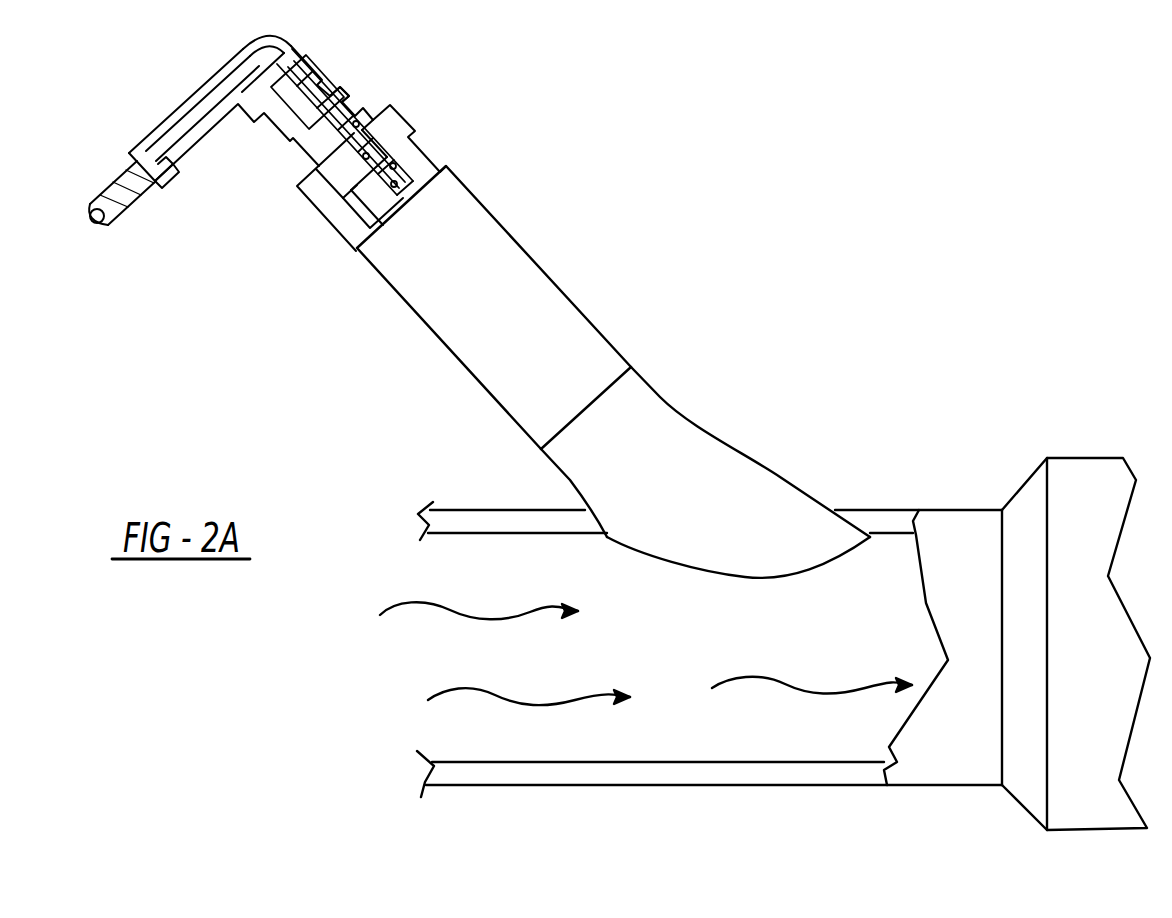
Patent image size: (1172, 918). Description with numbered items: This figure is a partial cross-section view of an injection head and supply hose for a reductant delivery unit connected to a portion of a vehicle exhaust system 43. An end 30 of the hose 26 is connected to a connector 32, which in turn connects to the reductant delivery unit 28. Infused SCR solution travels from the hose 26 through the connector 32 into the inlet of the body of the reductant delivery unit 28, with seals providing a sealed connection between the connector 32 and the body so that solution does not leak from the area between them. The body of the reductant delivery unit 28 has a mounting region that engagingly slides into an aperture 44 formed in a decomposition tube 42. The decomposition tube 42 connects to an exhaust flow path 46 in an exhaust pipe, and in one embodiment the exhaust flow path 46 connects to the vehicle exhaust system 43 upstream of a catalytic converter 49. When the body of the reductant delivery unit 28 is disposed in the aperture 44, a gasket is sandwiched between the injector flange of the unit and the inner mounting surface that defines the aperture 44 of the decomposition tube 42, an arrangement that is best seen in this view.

The hose 26 is at (125, 196).
The reductant delivery unit 28 is at (346, 98).
The end of the hose 30 is at (142, 167).
The connector 32 is at (214, 78).
The decomposition tube 42 is at (765, 510).
The vehicle exhaust system 43 is at (968, 334).
The aperture 44 is at (378, 152).
The exhaust flow path 46 is at (850, 630).
The catalytic converter 49 is at (1095, 458).